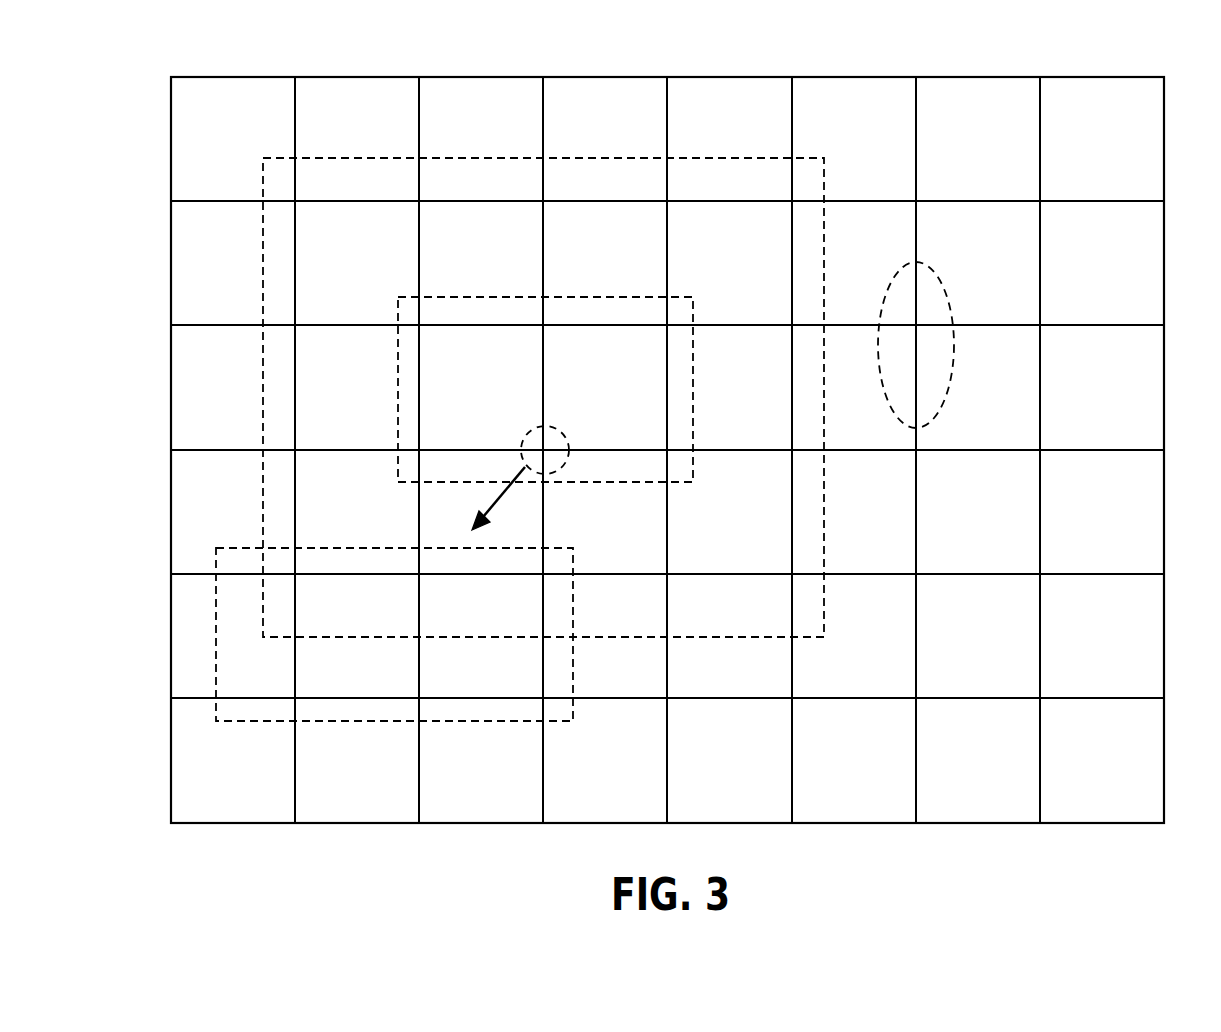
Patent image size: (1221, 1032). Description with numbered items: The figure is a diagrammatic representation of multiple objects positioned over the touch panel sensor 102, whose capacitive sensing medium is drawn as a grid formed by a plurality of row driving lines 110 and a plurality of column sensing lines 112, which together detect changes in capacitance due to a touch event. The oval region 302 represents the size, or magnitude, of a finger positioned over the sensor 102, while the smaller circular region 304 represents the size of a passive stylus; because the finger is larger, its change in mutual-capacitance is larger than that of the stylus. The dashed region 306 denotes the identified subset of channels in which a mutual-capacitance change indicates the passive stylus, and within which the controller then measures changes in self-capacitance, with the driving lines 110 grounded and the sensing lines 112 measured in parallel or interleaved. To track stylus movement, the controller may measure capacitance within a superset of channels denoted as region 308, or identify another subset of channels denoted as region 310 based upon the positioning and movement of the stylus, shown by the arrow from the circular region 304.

The touch panel sensor 102 is at (1132, 77).
The driving lines 110 is at (204, 199).
The sensing lines 112 is at (917, 125).
The oval region 302 is at (938, 280).
The circular region 304 is at (560, 430).
The region 306 is at (693, 297).
The region 308 is at (826, 177).
The region 310 is at (575, 635).